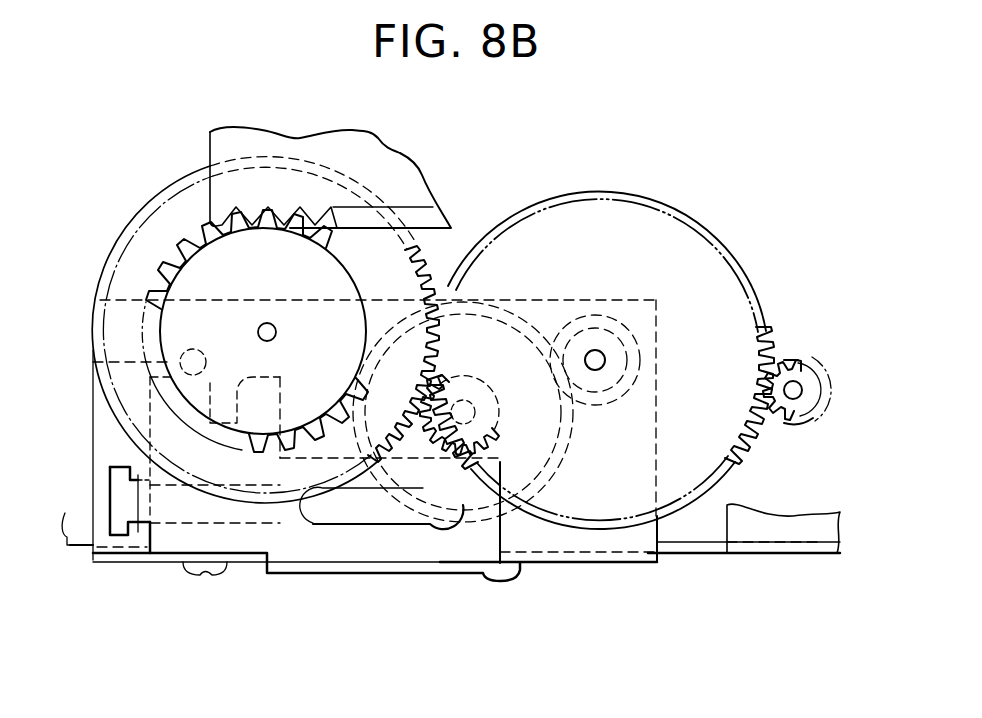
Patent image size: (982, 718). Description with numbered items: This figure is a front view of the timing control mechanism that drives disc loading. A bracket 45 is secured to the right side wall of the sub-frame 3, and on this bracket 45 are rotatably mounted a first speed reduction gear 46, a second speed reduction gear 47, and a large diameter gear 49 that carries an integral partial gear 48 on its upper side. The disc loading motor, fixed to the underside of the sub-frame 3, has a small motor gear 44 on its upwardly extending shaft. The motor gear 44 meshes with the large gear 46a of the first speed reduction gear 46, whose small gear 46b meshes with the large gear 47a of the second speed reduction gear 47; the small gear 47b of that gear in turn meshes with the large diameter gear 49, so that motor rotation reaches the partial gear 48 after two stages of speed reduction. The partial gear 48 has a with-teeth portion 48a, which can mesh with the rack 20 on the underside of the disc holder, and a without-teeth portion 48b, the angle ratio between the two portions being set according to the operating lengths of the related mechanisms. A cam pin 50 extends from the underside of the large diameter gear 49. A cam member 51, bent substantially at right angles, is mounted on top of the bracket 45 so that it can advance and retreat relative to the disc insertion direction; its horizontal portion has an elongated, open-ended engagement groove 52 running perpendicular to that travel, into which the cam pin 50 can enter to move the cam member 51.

The sub-frame 3 is at (782, 556).
The rack 20 is at (407, 163).
The motor gear 44 is at (802, 358).
The bracket 45 is at (640, 565).
The first speed reduction gear 46 is at (681, 208).
The large gear 46a is at (727, 245).
The small gear 46b is at (655, 373).
The second speed reduction gear 47 is at (484, 521).
The large gear 47a is at (412, 508).
The small gear 47b is at (540, 447).
The partial gear 48 is at (175, 259).
The with-teeth portion 48a is at (247, 440).
The without-teeth portion 48b is at (420, 258).
The large diameter gear 49 is at (263, 507).
The cam pin 50 is at (84, 357).
The cam member 51 is at (372, 577).
The engagement groove 52 is at (215, 418).